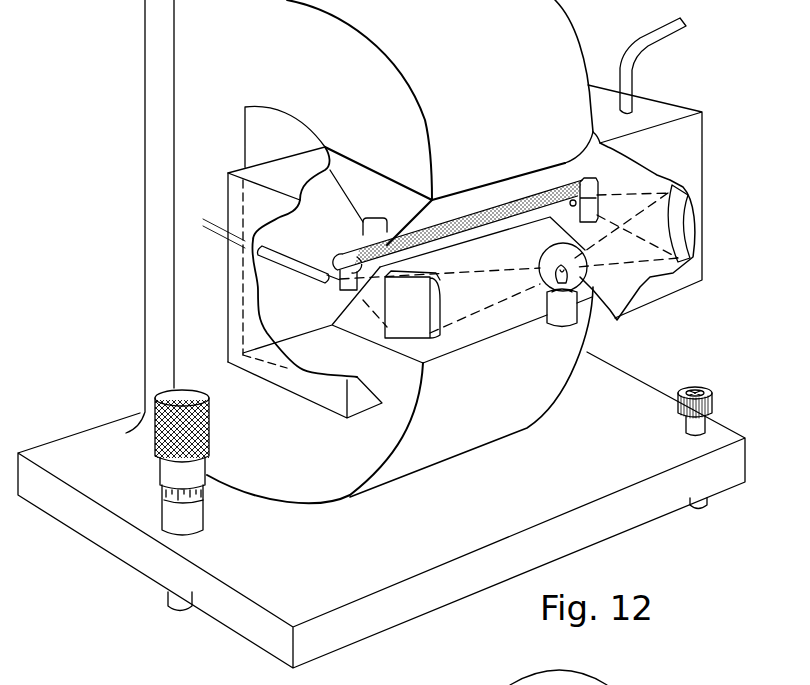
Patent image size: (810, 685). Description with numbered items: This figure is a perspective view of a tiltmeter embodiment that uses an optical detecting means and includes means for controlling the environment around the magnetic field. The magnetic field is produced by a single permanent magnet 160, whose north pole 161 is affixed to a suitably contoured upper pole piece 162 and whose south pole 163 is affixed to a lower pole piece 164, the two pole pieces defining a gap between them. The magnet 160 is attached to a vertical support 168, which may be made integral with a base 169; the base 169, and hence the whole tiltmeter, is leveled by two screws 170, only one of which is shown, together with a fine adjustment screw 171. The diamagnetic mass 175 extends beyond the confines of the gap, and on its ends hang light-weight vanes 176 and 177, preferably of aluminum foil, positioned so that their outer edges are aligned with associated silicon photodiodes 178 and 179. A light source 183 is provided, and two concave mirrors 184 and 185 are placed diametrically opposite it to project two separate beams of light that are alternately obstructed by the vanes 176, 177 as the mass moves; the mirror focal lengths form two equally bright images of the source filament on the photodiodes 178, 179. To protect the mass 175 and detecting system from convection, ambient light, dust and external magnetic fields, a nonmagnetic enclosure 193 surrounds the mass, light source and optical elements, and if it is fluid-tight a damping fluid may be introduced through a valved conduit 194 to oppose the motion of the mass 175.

The permanent magnet 160 is at (222, 178).
The north pole 161 is at (388, 160).
The upper pole piece 162 is at (470, 224).
The south pole 163 is at (320, 436).
The lower pole piece 164 is at (529, 321).
The vertical support 168 is at (158, 196).
The base 169 is at (320, 565).
The screws 170 is at (708, 389).
The fine adjustment screw 171 is at (192, 513).
The diamagnetic mass 175 is at (480, 215).
The vane 176 is at (341, 287).
The vane 177 is at (594, 203).
The photodiode 178 is at (297, 249).
The photodiode 179 is at (540, 212).
The light source 183 is at (561, 324).
The concave mirror 184 is at (418, 301).
The concave mirror 185 is at (692, 238).
The enclosure 193 is at (686, 155).
The valved conduit 194 is at (634, 72).